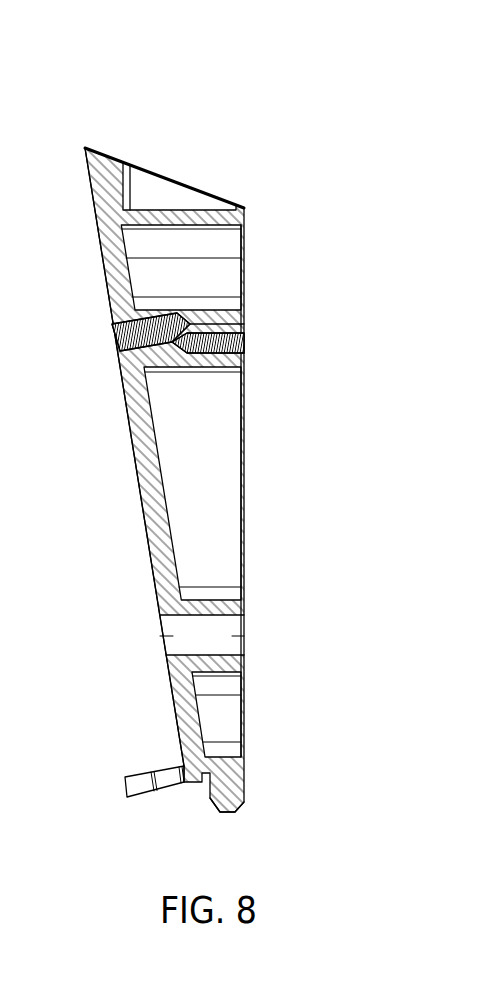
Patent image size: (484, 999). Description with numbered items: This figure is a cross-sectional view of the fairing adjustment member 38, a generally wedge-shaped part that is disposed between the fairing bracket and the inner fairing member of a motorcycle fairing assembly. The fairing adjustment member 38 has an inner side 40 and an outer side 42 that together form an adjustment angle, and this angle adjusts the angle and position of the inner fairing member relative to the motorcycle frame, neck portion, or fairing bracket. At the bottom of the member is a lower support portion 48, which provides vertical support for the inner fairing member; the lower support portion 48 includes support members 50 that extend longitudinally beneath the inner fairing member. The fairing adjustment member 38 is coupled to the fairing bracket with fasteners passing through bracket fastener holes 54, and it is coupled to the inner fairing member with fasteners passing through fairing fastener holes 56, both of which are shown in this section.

The fairing adjustment member 38 is at (214, 127).
The inner side 40 is at (244, 507).
The outer side 42 is at (99, 237).
The lower support portion 48 is at (279, 777).
The support member 50 is at (137, 783).
The bracket fastener hole 54 is at (237, 340).
The fairing fastener hole 56 is at (117, 342).